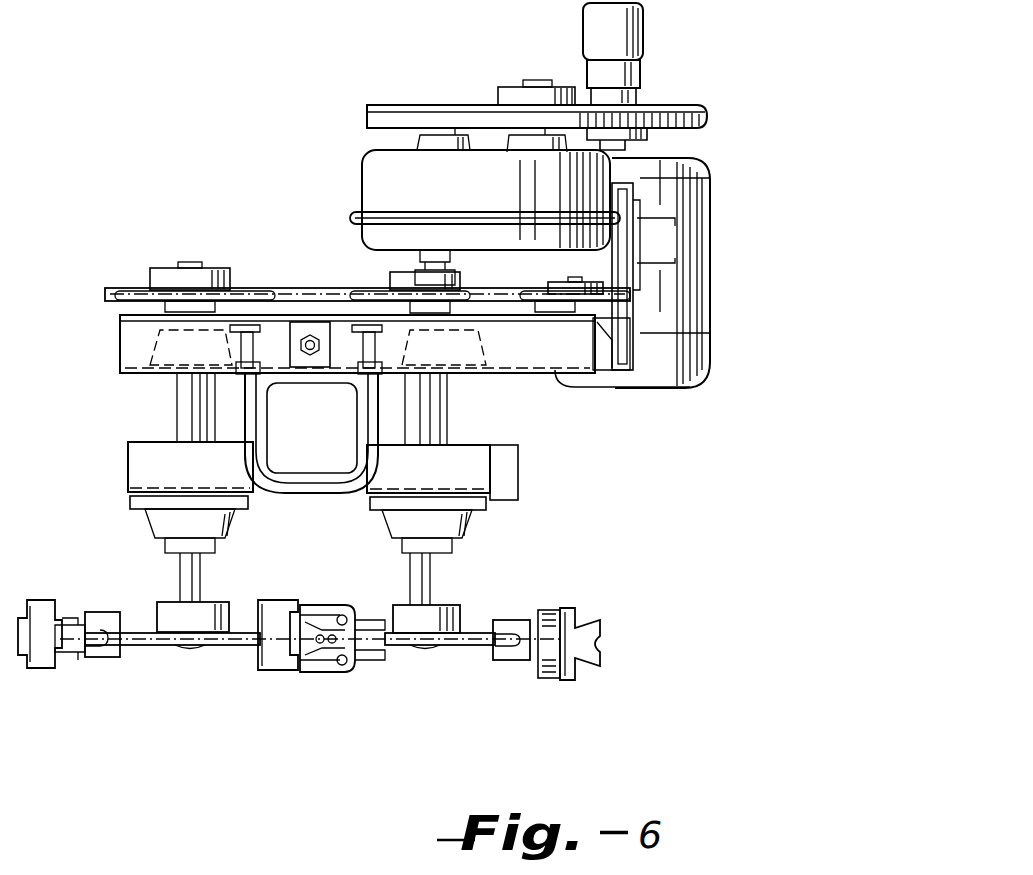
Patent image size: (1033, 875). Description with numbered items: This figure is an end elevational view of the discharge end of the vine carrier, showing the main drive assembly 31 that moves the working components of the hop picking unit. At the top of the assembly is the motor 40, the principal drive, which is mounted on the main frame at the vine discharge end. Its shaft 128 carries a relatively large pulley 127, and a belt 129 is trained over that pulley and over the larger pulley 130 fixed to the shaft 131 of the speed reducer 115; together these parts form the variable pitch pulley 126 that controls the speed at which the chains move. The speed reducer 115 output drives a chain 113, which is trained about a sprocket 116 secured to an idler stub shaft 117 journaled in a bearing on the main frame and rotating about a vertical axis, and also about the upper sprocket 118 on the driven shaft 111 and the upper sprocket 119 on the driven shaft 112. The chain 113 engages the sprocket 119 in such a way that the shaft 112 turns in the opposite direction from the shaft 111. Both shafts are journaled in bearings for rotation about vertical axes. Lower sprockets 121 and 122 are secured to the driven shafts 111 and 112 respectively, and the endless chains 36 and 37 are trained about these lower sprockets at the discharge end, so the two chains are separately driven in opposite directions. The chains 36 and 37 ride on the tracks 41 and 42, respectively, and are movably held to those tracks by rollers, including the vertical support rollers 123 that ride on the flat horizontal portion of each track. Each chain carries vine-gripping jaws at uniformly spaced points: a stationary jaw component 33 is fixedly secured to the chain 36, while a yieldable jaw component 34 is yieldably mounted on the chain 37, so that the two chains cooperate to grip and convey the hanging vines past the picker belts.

The main drive assembly 31 is at (243, 153).
The stationary jaw component 33 is at (42, 665).
The yieldable jaw component 34 is at (340, 672).
The endless chain 36 is at (150, 648).
The endless chain 37 is at (456, 648).
The motor 40 is at (712, 258).
The track 41 is at (103, 612).
The track 42 is at (508, 620).
The driven shaft 111 is at (202, 582).
The driven shaft 112 is at (415, 578).
The chain 113 is at (290, 292).
The speed reducer 115 is at (360, 178).
The sprocket 116 is at (538, 292).
The idler stub shaft 117 is at (572, 282).
The upper sprocket 118 is at (143, 290).
The upper sprocket 119 is at (372, 292).
The lower sprocket 121 is at (214, 648).
The lower sprocket 122 is at (402, 645).
The vertical support roller 123 is at (72, 655).
The variable pitch pulley 126 is at (645, 40).
The pulley 127 is at (674, 105).
The shaft 128 is at (620, 148).
The belt 129 is at (710, 118).
The pulley 130 is at (388, 105).
The shaft 131 is at (420, 262).